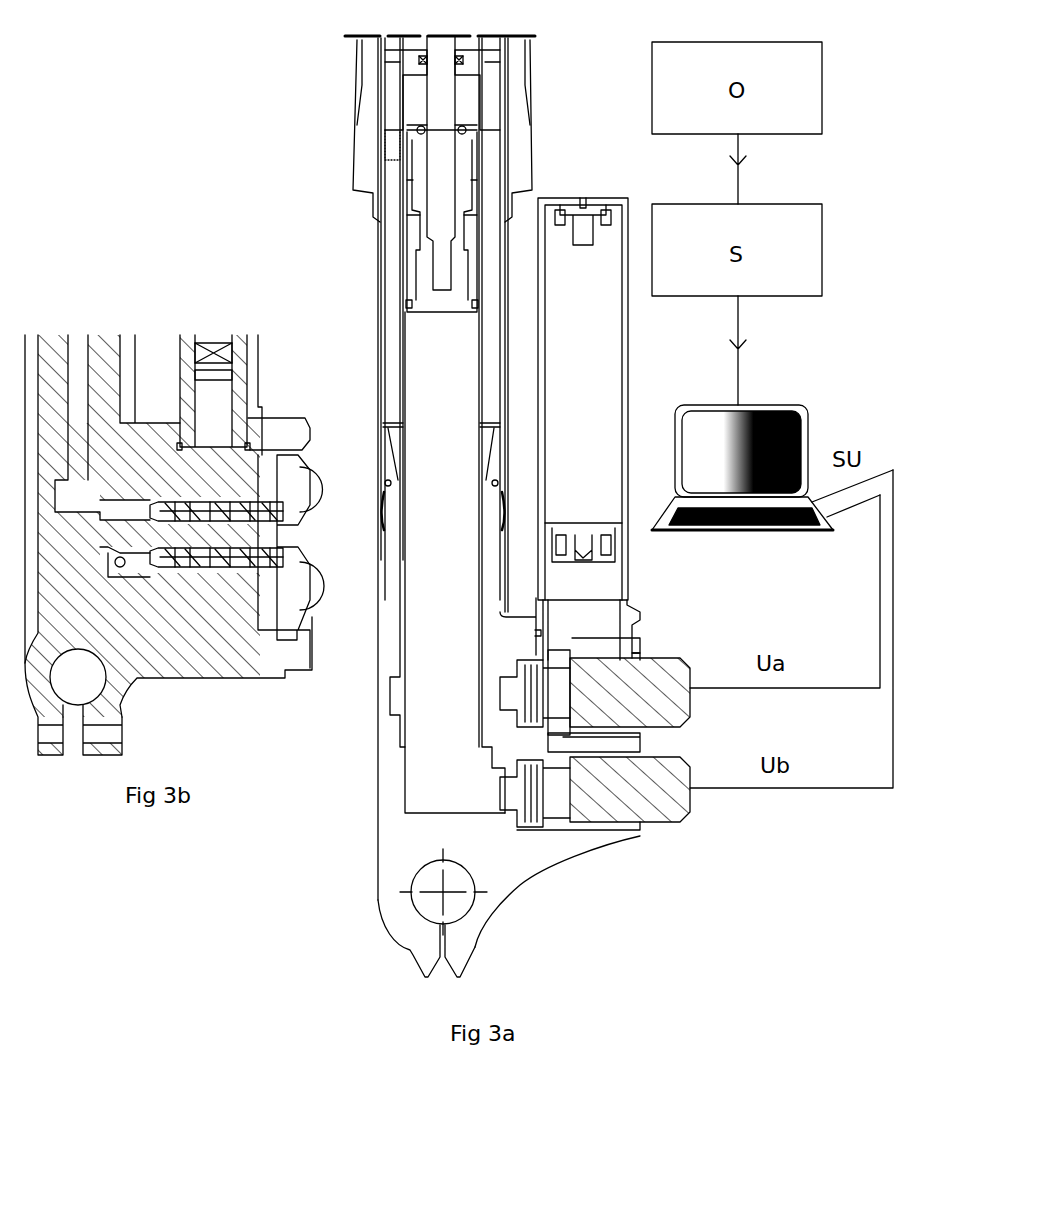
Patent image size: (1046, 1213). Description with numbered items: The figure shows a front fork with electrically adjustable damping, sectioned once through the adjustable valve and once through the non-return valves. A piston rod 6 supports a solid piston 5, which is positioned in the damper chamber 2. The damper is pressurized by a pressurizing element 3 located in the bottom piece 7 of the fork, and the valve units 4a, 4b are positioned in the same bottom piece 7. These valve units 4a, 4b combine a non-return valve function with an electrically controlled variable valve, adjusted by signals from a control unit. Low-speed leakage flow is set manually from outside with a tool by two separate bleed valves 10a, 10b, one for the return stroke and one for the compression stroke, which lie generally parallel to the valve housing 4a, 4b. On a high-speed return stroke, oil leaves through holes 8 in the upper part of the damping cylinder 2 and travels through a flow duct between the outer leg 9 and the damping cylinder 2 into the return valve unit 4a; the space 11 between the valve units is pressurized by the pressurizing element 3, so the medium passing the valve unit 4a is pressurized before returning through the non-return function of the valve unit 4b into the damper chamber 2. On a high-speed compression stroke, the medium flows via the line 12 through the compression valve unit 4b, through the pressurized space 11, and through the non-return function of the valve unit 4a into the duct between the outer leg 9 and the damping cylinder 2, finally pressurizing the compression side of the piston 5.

In FIG. 3a, the damper chamber 2 is at (398, 240).
In FIG. 3a, the pressurizing element 3 is at (606, 197).
In FIG. 3a, the return valve unit 4a is at (672, 663).
In FIG. 3a, the compression valve unit 4b is at (670, 805).
In FIG. 3a, the piston 5 is at (417, 293).
In FIG. 3a, the piston rod 6 is at (428, 147).
In FIG. 3a, the bottom piece 7 is at (397, 817).
In FIG. 3a, the holes 8 is at (402, 210).
In FIG. 3a, the outer leg 9 is at (375, 382).
In FIG. 3b, the bleed valve 10a is at (283, 512).
In FIG. 3b, the bleed valve 10b is at (283, 558).
In FIG. 3a, the space 11 is at (645, 736).
In FIG. 3a, the line 12 is at (472, 773).